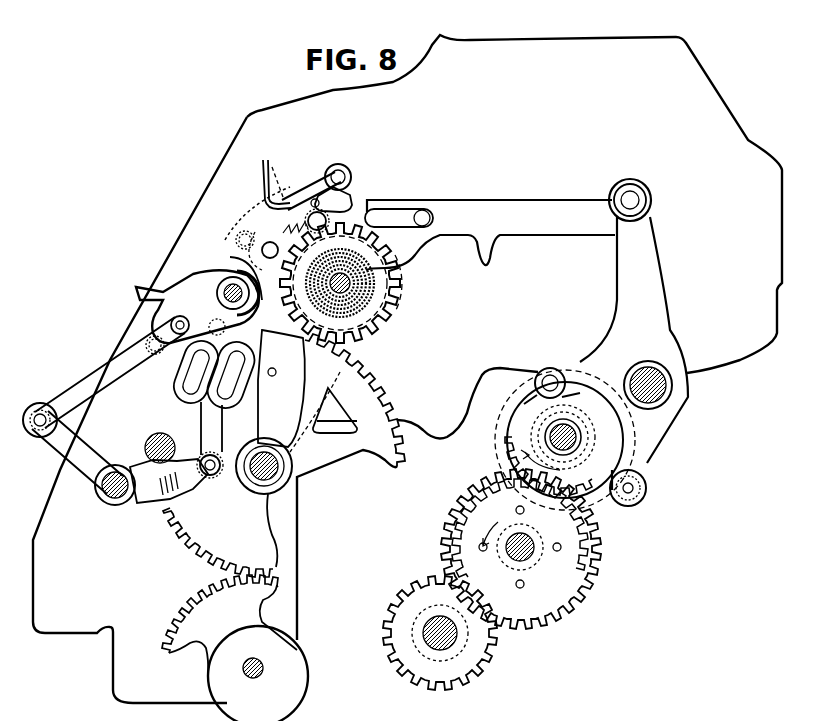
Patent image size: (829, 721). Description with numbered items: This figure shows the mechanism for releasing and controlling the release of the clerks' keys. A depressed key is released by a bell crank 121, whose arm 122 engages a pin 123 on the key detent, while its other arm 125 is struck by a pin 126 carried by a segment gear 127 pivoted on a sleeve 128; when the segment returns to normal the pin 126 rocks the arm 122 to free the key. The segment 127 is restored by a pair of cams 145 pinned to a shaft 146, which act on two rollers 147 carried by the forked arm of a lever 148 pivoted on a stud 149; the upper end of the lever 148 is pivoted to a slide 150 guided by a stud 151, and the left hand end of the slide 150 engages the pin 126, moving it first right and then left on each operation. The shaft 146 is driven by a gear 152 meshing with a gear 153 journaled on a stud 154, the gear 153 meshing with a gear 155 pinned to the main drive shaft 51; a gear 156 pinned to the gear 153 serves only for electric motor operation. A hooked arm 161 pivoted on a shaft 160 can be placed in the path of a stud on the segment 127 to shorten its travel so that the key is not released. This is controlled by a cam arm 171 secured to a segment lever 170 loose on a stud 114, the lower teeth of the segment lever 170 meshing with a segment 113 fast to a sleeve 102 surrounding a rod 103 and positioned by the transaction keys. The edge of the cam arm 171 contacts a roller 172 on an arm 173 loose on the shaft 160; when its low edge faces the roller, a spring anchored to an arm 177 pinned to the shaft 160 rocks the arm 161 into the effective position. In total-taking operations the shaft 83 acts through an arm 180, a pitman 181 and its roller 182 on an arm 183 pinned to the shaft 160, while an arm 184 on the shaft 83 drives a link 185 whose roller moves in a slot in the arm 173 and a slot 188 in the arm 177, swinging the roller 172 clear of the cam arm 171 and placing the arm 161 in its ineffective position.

The shaft 51 is at (450, 622).
The shaft 83 is at (118, 472).
The sleeve 102 is at (263, 650).
The rod 103 is at (253, 680).
The segment 113 is at (253, 623).
The stud 114 is at (270, 470).
The bell crank 121 is at (318, 178).
The arm 122 is at (268, 163).
The pin 123 is at (345, 172).
The arm 125 is at (352, 198).
The pin 126 is at (276, 247).
The segment gear 127 is at (240, 215).
The sleeve 128 is at (397, 313).
The cams 145 is at (525, 410).
The shaft 146 is at (577, 438).
The rollers 147 is at (550, 368).
The lever 148 is at (664, 290).
The stud 149 is at (655, 360).
The slide 150 is at (513, 200).
The stud 151 is at (432, 217).
The gear 152 is at (590, 438).
The gear 153 is at (484, 480).
The stud 154 is at (532, 555).
The gear 155 is at (490, 650).
The gear 156 is at (598, 528).
The shaft 160 is at (250, 294).
The arm 161 is at (232, 258).
The segment lever 170 is at (320, 455).
The cam arm 171 is at (282, 330).
The roller 172 is at (171, 327).
The arm 173 is at (201, 417).
The arm 177 is at (177, 391).
The arm 180 is at (75, 478).
The pitman 181 is at (95, 378).
The roller 182 is at (146, 345).
The arm 183 is at (139, 288).
The arm 184 is at (147, 497).
The link 185 is at (202, 433).
The slot 188 is at (193, 370).